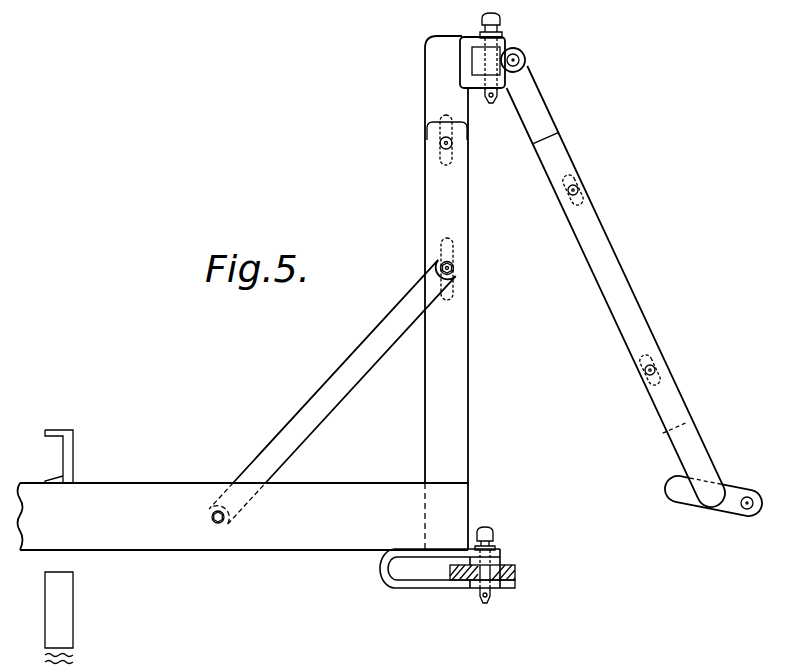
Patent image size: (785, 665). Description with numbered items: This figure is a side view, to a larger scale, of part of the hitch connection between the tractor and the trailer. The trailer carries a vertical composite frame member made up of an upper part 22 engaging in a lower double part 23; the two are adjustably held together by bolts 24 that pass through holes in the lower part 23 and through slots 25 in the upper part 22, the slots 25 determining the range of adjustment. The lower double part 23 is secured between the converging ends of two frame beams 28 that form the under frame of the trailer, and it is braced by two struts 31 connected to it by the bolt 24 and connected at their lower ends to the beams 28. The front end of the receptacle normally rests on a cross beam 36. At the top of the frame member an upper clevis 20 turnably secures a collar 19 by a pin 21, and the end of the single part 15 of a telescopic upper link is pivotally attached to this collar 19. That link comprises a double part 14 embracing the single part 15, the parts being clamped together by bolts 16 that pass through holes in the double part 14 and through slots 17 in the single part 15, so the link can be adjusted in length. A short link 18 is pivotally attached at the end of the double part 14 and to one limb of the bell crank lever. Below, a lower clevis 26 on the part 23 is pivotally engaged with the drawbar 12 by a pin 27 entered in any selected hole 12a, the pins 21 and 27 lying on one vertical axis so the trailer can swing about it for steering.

The drawbar 12 is at (517, 568).
The hole 12a is at (500, 587).
The double part 14 is at (680, 405).
The single part 15 is at (688, 422).
The bolts 16 is at (580, 190).
The slots 17 is at (607, 160).
The short link 18 is at (728, 512).
The collar 19 is at (523, 66).
The upper clevis 20 is at (461, 38).
The pin 21 is at (503, 20).
The upper part 22 is at (433, 100).
The lower double part 23 is at (458, 331).
The bolts 24 is at (458, 258).
The slots 25 is at (437, 152).
The lower clevis 26 is at (440, 587).
The pin 27 is at (494, 532).
The frame beams 28 is at (300, 540).
The struts 31 is at (323, 397).
The cross beam 36 is at (75, 453).